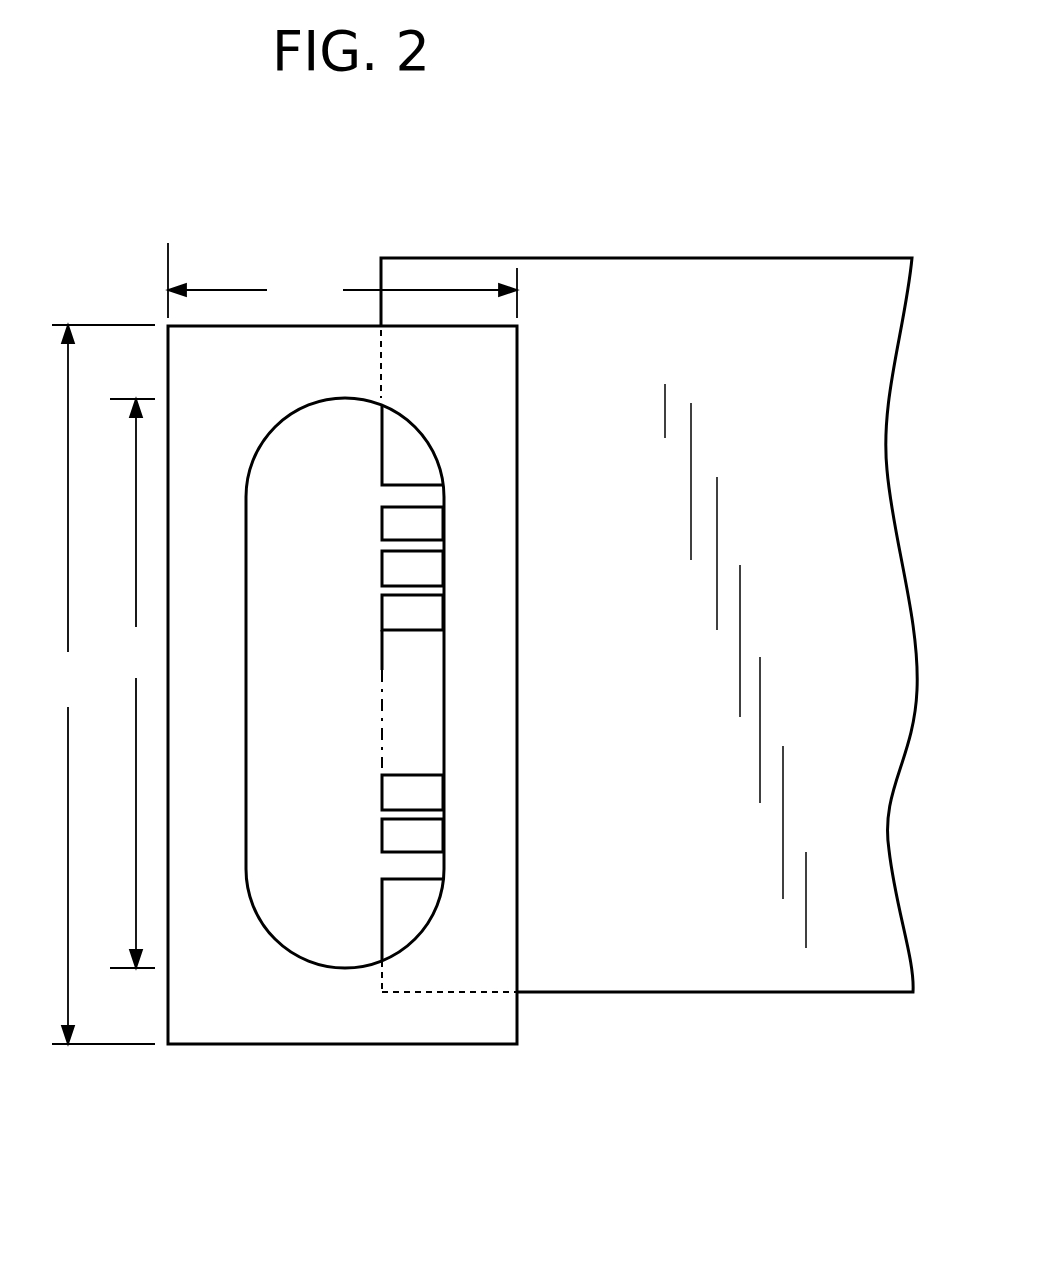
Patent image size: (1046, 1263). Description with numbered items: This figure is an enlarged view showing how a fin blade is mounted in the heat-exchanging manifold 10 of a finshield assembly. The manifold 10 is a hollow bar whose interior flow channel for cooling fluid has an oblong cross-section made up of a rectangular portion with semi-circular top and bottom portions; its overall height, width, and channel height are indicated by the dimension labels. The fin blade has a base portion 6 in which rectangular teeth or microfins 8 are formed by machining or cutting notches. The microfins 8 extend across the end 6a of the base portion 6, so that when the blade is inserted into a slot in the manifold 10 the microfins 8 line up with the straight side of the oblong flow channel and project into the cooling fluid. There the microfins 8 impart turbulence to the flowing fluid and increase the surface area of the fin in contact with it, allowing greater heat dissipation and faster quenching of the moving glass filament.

The fin base portion 6 is at (613, 953).
The end of base portion 6a is at (380, 983).
The microfins 8 is at (423, 611).
The manifold 10 is at (213, 1022).